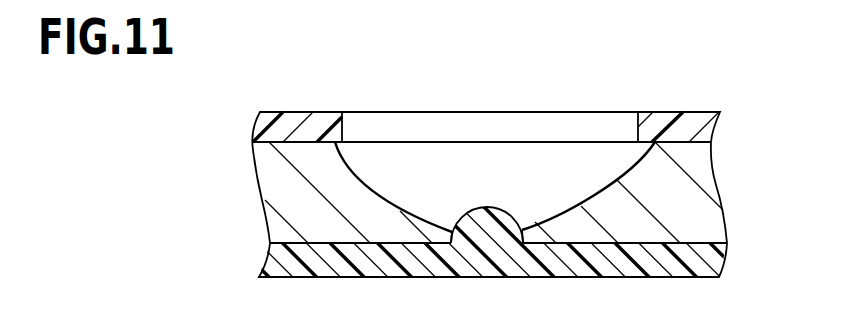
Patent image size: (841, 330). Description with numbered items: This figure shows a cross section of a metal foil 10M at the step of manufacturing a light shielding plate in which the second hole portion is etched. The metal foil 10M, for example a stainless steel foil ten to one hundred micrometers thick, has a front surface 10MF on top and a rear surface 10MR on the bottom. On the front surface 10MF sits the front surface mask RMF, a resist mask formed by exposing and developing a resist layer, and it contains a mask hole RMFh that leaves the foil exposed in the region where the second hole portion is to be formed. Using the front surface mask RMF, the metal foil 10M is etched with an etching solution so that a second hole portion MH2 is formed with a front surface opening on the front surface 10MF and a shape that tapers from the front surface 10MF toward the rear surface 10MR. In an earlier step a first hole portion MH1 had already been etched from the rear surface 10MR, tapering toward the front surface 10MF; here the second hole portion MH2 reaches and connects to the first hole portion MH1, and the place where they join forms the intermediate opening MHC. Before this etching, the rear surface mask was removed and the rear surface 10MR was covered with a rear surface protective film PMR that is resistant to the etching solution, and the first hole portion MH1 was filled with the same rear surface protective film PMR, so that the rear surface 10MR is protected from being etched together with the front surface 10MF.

The metal foil 10M is at (720, 183).
The front surface 10MF is at (713, 131).
The rear surface 10MR is at (726, 247).
The first hole portion MH1 is at (521, 240).
The second hole portion MH2 is at (372, 180).
The intermediate opening MHC is at (545, 237).
The front surface mask RMF is at (253, 127).
The mask hole RMFh is at (637, 128).
The rear surface protective film PMR is at (263, 262).